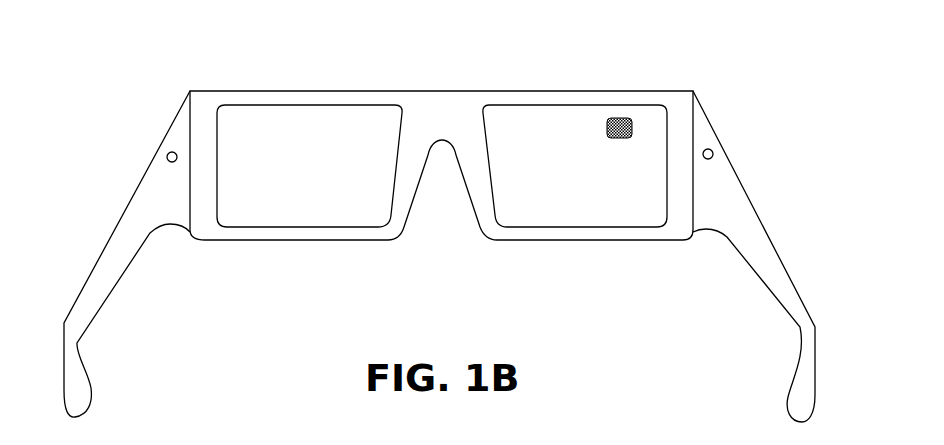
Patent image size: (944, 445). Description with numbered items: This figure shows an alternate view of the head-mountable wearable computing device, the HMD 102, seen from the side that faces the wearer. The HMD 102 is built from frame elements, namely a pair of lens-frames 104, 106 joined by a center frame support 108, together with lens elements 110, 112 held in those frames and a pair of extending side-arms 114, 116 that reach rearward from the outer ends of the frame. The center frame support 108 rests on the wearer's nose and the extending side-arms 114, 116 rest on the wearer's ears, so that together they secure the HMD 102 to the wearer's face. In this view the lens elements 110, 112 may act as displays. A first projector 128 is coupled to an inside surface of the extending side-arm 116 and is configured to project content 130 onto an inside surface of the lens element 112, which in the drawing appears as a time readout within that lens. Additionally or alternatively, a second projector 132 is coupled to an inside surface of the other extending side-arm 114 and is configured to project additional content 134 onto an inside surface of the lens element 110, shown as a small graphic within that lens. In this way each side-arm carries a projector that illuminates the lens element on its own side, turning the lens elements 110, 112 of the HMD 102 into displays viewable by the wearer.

The HMD 102 is at (240, 78).
The lens-frame 104 is at (656, 240).
The lens-frame 106 is at (239, 241).
The center frame support 108 is at (438, 90).
The lens element 110 is at (541, 220).
The lens element 112 is at (325, 220).
The extending side-arm 114 is at (745, 190).
The extending side-arm 116 is at (110, 220).
The first projector 128 is at (166, 155).
The content 130 is at (304, 132).
The second projector 132 is at (710, 148).
The additional content 134 is at (609, 132).